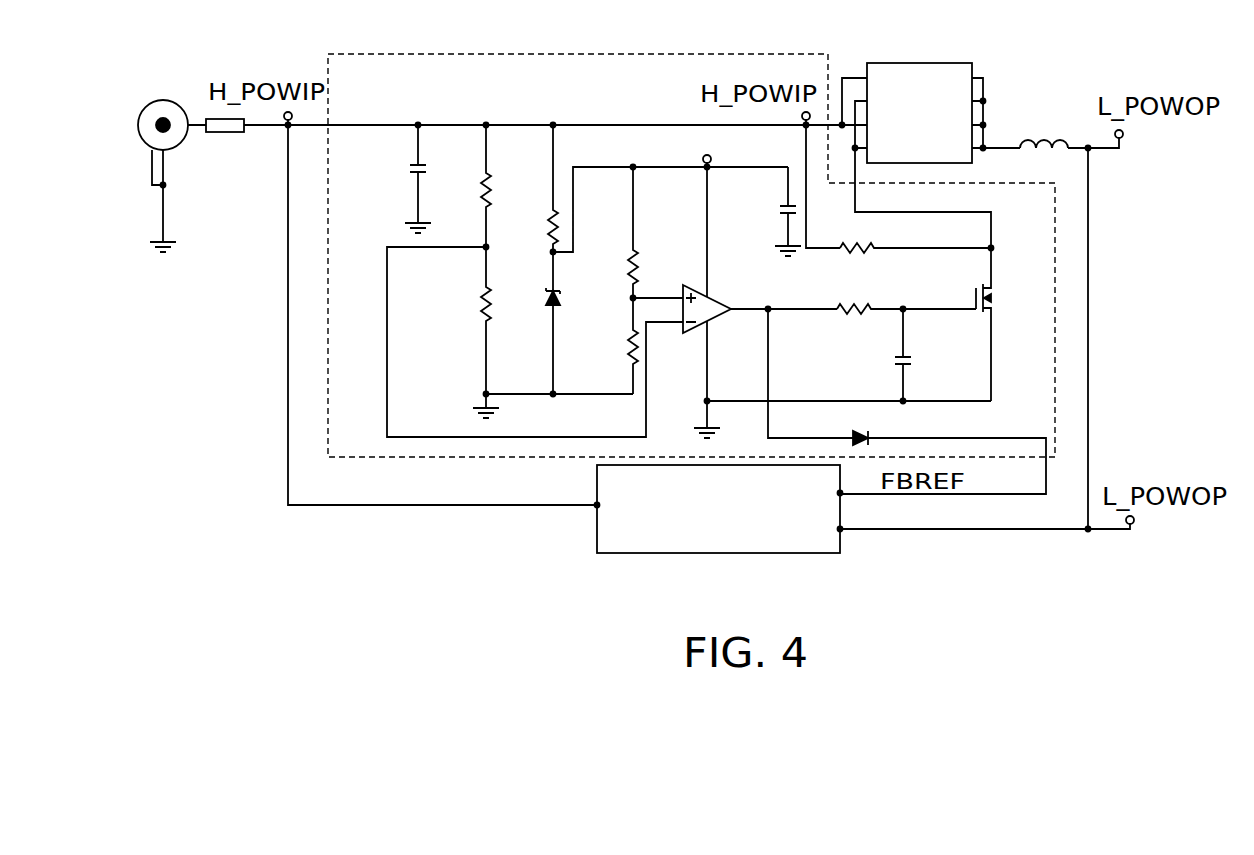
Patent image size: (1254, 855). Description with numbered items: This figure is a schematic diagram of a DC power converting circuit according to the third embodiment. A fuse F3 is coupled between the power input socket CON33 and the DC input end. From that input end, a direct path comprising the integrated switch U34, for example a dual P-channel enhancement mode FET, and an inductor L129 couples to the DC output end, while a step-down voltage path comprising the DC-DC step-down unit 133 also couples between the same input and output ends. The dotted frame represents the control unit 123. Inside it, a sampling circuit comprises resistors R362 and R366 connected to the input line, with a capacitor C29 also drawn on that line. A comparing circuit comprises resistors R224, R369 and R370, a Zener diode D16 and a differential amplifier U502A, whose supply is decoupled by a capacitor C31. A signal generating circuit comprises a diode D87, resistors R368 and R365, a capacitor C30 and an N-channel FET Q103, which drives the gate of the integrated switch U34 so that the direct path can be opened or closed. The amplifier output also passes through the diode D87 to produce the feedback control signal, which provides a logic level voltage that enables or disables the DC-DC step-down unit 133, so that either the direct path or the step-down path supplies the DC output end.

The control unit 123 is at (600, 53).
The DC-DC step-down unit 133 is at (700, 553).
The power input socket CON33 is at (158, 165).
The fuse F3 is at (227, 145).
The capacitor C29 is at (383, 178).
The resistor R362 is at (455, 185).
The resistor R366 is at (458, 332).
The resistor R224 is at (640, 190).
The Zener diode D16 is at (529, 324).
The resistor R369 is at (602, 236).
The resistor R370 is at (602, 346).
The capacitor C31 is at (757, 211).
The differential amplifier U502A is at (740, 305).
The resistor R368 is at (890, 298).
The capacitor C30 is at (872, 355).
The resistor R365 is at (906, 237).
The FET Q103 is at (958, 324).
The diode D87 is at (839, 429).
The integrated switch U34 is at (919, 100).
The inductor L129 is at (1052, 135).